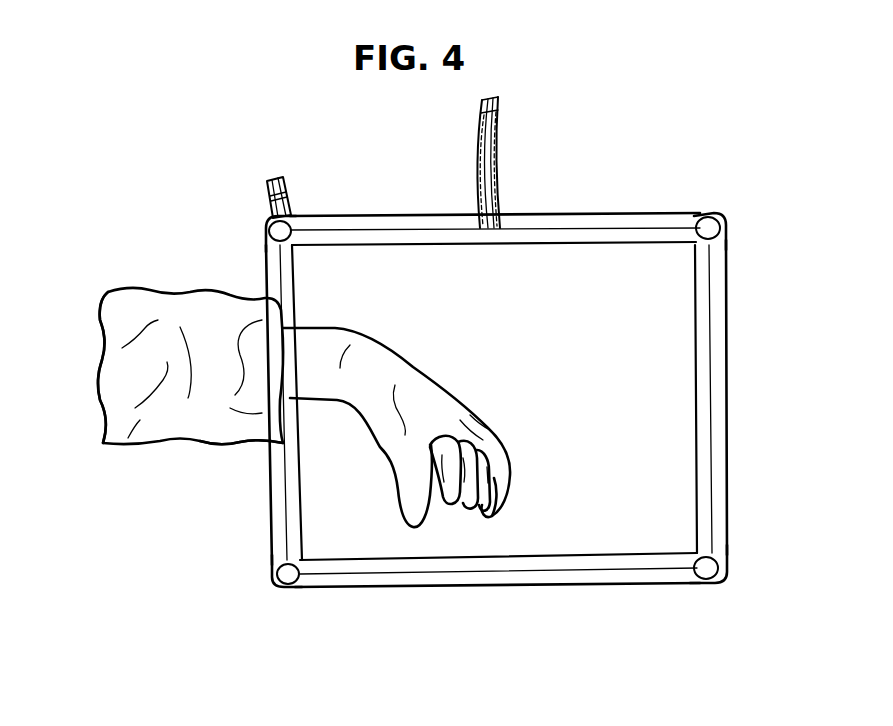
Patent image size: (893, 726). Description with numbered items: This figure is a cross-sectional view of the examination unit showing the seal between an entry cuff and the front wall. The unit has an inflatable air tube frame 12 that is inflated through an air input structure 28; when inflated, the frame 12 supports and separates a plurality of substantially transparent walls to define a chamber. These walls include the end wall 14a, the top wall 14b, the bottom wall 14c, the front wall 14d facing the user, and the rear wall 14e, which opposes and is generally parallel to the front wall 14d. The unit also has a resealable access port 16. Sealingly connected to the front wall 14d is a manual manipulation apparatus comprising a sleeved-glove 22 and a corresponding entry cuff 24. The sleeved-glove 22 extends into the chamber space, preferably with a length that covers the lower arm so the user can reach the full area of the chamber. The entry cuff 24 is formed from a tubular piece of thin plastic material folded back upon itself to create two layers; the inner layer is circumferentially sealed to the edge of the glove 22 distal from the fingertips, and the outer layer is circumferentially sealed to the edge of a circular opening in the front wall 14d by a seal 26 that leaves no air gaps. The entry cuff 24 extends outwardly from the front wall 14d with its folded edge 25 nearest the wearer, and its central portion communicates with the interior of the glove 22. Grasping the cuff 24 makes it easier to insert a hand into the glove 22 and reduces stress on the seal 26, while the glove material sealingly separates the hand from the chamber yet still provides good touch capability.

The inflatable air tube frame 12 is at (499, 399).
The end wall 14a is at (650, 408).
The top wall 14b is at (364, 218).
The bottom wall 14c is at (553, 585).
The front wall 14d is at (277, 272).
The rear wall 14e is at (712, 342).
The resealable access port 16 is at (508, 150).
The sleeved-glove 22 is at (423, 390).
The entry cuff 24 is at (159, 400).
The folded edge 25 is at (100, 352).
The seal 26 is at (257, 413).
The air input structure 28 is at (276, 177).